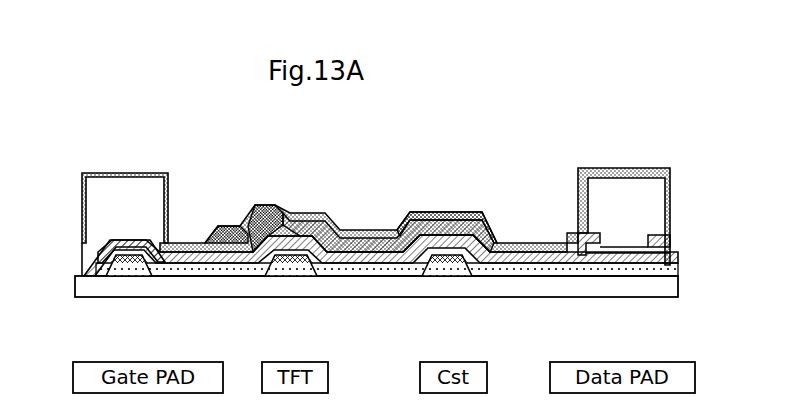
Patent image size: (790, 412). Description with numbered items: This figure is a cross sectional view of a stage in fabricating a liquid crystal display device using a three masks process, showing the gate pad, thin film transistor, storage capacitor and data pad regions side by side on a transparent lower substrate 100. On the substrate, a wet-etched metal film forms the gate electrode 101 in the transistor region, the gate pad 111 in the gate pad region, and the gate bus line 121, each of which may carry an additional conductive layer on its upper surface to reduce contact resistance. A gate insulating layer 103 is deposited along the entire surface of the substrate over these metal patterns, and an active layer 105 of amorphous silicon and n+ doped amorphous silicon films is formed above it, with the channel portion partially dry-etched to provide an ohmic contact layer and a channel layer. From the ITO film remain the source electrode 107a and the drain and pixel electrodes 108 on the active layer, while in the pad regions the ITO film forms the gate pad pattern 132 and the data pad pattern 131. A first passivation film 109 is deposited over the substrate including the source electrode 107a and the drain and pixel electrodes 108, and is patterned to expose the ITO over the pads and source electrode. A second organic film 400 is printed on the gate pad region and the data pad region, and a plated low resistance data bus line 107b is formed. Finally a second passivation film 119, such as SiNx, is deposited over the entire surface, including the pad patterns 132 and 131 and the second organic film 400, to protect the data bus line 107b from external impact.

The transparent lower substrate 100 is at (100, 292).
The gate electrode 101 is at (290, 280).
The gate insulating layer 103 is at (215, 278).
The active layer 105 is at (607, 268).
The source electrode 107a is at (265, 208).
The low resistance data bus line 107b is at (228, 224).
The drain and pixel electrodes 108 is at (330, 204).
The first passivation film 109 is at (446, 216).
The gate pad 111 is at (128, 280).
The second passivation film 119 is at (366, 232).
The gate bus line 121 is at (446, 280).
The data pad pattern 131 is at (576, 238).
The gate pad pattern 132 is at (100, 242).
The second organic film 400 is at (136, 190).